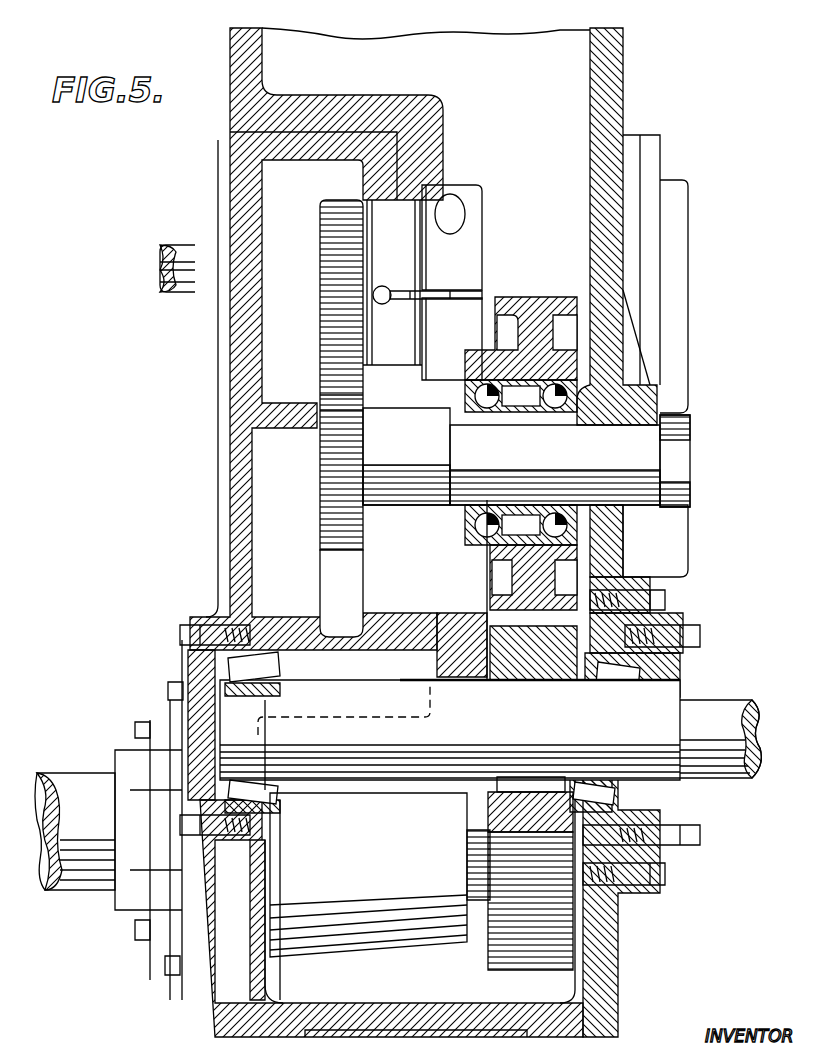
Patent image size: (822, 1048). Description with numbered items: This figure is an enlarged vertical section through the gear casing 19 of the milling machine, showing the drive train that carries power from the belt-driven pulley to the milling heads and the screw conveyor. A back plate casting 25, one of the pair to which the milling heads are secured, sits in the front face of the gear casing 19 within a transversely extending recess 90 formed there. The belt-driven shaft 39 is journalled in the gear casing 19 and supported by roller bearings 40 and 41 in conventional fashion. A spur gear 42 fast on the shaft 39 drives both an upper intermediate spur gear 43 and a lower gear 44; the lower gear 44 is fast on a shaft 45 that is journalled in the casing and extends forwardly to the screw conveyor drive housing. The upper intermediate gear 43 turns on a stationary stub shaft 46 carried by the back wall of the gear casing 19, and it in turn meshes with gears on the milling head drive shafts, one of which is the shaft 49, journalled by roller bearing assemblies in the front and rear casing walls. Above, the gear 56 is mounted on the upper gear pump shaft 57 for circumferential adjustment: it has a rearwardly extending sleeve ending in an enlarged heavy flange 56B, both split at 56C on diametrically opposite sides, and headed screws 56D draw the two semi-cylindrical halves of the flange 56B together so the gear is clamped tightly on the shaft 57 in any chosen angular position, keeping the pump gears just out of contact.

The gear casing 19 is at (652, 388).
The back plate casting 25 is at (240, 220).
The shaft 39 is at (738, 712).
The roller bearing 40 is at (632, 660).
The roller bearing 41 is at (240, 690).
The spur gear 42 is at (500, 652).
The upper intermediate spur gear 43 is at (540, 300).
The lower gear 44 is at (492, 947).
The shaft 45 is at (95, 900).
The stationary stub shaft 46 is at (536, 454).
The milling head drive shaft 49 is at (420, 450).
The gear 56 is at (320, 218).
The flange 56B is at (470, 200).
The split 56C is at (428, 292).
The headed screw 56D is at (462, 292).
The upper gear pump shaft 57 is at (186, 245).
The transversely extending recess 90 is at (232, 142).